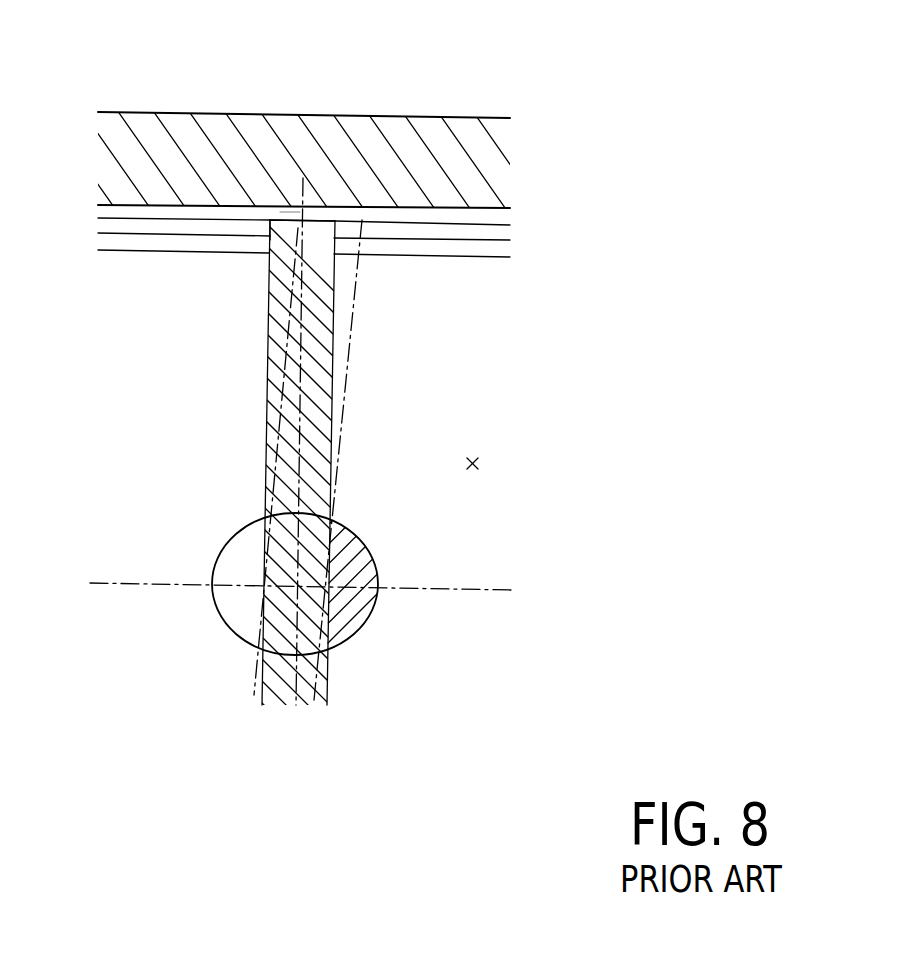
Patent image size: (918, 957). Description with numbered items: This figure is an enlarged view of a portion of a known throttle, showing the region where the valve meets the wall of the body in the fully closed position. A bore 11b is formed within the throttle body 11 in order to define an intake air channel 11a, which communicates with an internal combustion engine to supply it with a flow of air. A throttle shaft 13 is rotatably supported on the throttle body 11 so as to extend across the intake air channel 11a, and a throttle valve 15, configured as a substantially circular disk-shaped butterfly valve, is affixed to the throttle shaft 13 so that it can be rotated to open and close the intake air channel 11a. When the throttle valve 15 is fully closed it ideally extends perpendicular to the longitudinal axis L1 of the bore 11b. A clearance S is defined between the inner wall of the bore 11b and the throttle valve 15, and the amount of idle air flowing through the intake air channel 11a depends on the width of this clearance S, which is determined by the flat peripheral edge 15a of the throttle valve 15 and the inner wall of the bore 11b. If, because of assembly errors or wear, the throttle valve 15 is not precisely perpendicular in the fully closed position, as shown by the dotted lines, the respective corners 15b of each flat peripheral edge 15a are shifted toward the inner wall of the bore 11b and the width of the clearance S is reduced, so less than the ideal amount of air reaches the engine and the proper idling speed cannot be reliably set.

The throttle body 11 is at (467, 135).
The intake air channel 11a is at (478, 462).
The bore 11b is at (467, 208).
The throttle shaft 13 is at (357, 550).
The throttle valve 15 is at (268, 364).
The flat peripheral edge 15a is at (280, 220).
The corner 15b is at (302, 250).
The clearance S is at (305, 219).
The longitudinal axis L1 is at (325, 588).